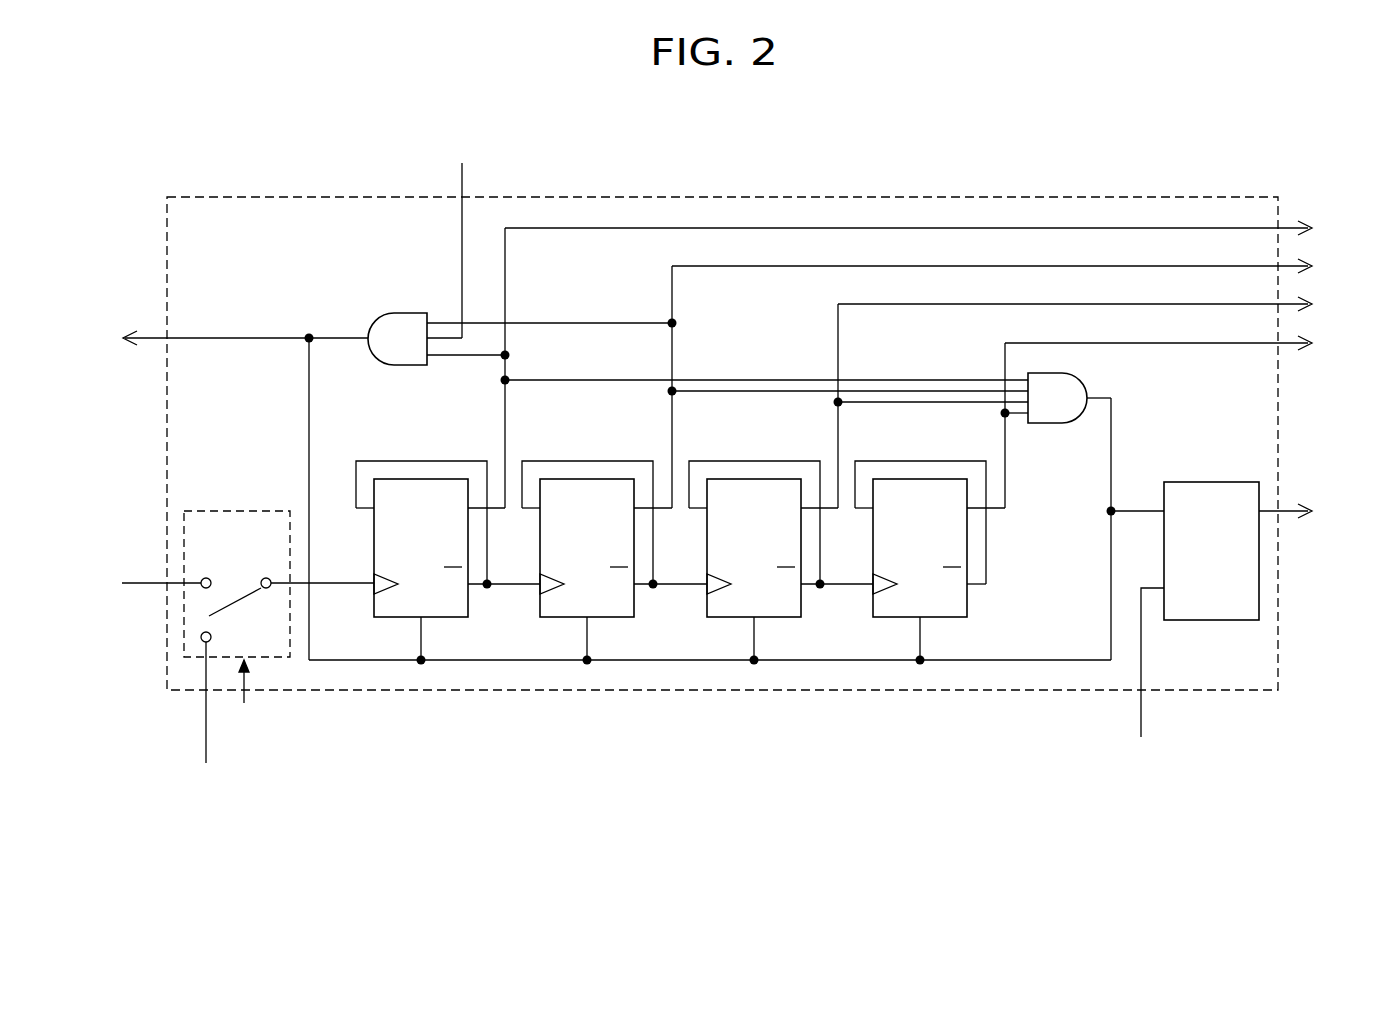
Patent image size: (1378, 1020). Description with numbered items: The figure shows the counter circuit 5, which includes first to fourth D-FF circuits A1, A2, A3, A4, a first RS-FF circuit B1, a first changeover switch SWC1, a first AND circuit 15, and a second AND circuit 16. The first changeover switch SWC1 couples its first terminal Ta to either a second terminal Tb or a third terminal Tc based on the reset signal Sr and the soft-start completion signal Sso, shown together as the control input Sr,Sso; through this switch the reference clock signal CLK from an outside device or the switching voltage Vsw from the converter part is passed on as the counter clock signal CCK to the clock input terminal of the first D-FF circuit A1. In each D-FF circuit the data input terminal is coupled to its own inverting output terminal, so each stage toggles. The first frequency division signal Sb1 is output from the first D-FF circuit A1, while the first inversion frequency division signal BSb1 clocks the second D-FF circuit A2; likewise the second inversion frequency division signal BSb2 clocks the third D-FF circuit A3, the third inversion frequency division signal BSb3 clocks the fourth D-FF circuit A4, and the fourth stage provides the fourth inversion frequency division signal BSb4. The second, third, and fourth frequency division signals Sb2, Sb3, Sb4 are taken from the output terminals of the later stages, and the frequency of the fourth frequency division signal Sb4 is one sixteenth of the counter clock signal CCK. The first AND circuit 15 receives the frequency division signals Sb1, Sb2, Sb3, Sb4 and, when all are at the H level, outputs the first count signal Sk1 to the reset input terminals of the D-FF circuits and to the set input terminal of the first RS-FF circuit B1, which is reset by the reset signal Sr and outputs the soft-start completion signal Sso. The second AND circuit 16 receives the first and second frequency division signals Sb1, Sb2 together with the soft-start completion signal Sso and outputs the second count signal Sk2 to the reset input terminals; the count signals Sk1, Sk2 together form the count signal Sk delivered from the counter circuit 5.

The counter circuit 5 is at (790, 196).
The first AND circuit 15 is at (1052, 423).
The second AND circuit 16 is at (403, 312).
The first changeover switch SWC1 is at (238, 508).
The first terminal Ta is at (266, 578).
The second terminal Tb is at (206, 578).
The third terminal Tc is at (211, 637).
The first D-FF circuit A1 is at (435, 617).
The second D-FF circuit A2 is at (601, 617).
The third D-FF circuit A3 is at (768, 617).
The fourth D-FF circuit A4 is at (934, 617).
The first RS-FF circuit B1 is at (1210, 620).
The first inversion frequency division signal BSb1 is at (448, 545).
The second inversion frequency division signal BSb2 is at (614, 545).
The third inversion frequency division signal BSb3 is at (781, 545).
The fourth inversion frequency division signal BSb4 is at (930, 545).
The first frequency division signal Sb1 is at (931, 362).
The second frequency division signal Sb2 is at (1014, 381).
The third frequency division signal Sb3 is at (1097, 400).
The fourth frequency division signal Sb4 is at (1181, 419).
The count signal Sk is at (197, 337).
The first count signal Sk1 is at (1125, 529).
The second count signal Sk2 is at (697, 478).
The soft-start completion signal Sso is at (462, 232).
The reset signal Sr is at (1143, 677).
The reference clock signal CLK is at (135, 582).
The counter clock signal CCK is at (322, 601).
The switching voltage Vsw is at (201, 717).
The reset signal and soft-start completion signal Sr,Sso is at (260, 695).